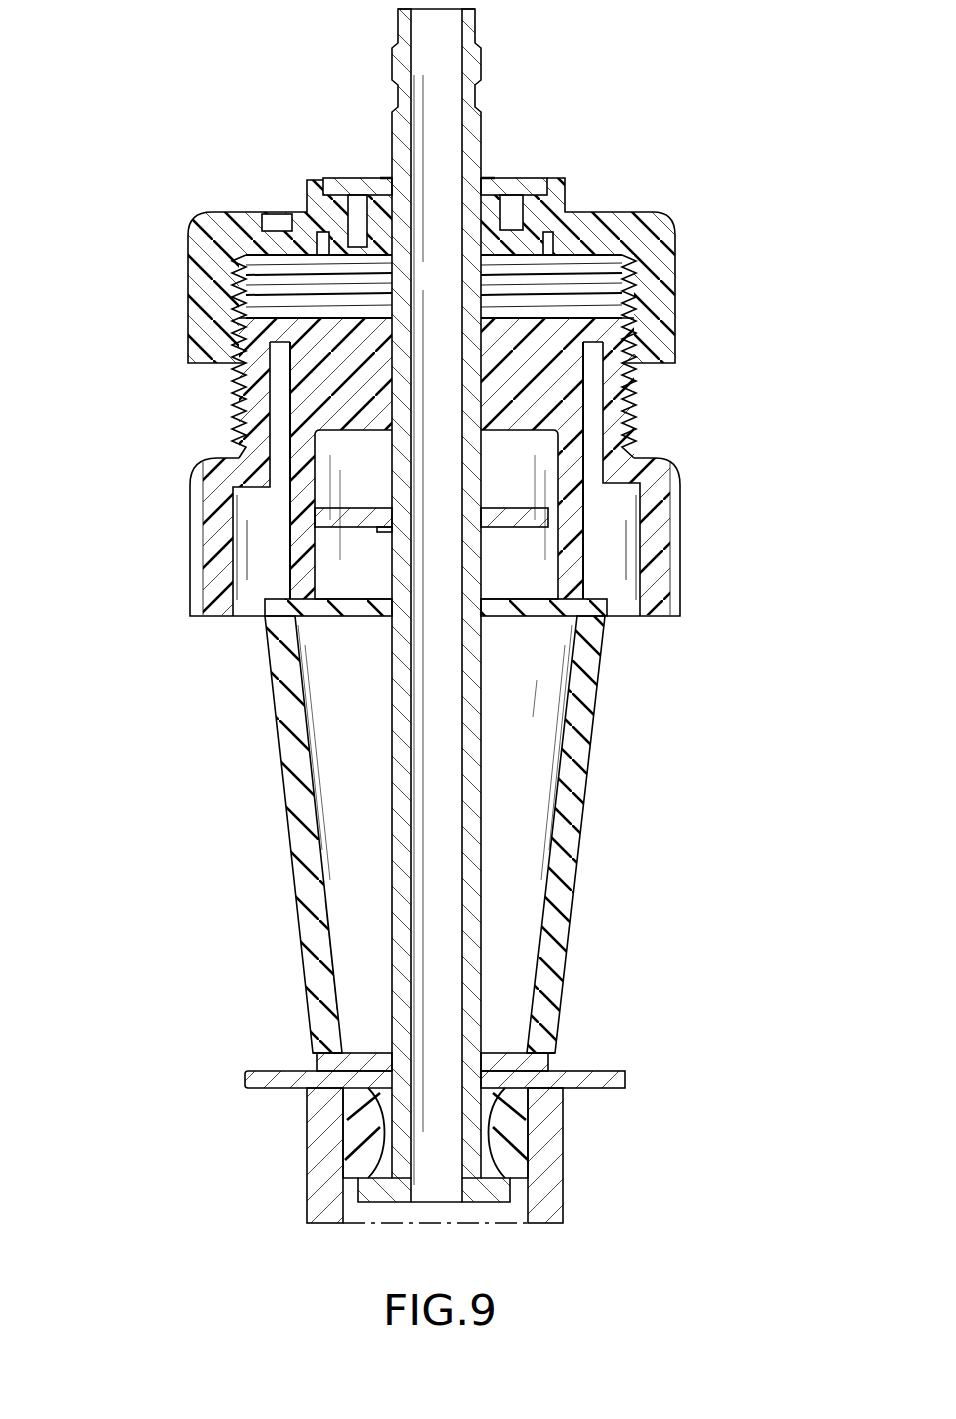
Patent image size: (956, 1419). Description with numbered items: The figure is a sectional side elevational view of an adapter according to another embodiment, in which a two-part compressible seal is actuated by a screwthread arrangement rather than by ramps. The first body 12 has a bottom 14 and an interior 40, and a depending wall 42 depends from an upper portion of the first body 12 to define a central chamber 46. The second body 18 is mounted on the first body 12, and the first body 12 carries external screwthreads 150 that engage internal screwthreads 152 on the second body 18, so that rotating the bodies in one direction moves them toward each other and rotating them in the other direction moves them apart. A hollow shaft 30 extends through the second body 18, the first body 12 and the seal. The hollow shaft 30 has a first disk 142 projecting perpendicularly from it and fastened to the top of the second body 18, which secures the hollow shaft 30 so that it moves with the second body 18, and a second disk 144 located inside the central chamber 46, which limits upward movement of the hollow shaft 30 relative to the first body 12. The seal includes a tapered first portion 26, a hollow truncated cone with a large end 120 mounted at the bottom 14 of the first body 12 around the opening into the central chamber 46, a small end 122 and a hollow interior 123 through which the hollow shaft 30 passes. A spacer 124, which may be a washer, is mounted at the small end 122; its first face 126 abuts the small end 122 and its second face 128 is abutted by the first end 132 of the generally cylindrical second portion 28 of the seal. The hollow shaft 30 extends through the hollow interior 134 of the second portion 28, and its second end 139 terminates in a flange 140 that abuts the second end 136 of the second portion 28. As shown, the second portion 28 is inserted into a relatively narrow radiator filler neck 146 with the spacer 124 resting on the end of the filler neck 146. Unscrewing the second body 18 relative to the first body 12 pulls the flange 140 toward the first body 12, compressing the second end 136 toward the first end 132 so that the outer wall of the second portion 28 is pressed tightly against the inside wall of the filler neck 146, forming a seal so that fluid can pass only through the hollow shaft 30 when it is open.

The first body 12 is at (680, 573).
The bottom 14 is at (662, 617).
The second body 18 is at (675, 277).
The first portion 26 is at (580, 838).
The second portion 28 is at (468, 1145).
The hollow shaft 30 is at (470, 150).
The interior 40 is at (270, 583).
The depending wall 42 is at (303, 520).
The central chamber 46 is at (525, 473).
The large end 120 is at (282, 658).
The small end 122 is at (310, 1013).
The hollow interior 123 is at (523, 748).
The spacer 124 is at (540, 1067).
The first face 126 is at (540, 1047).
The second face 128 is at (530, 1077).
The first end 132 is at (363, 1080).
The hollow interior 134 is at (377, 1125).
The second end 136 is at (363, 1163).
The second end 139 is at (512, 1130).
The flange 140 is at (492, 1203).
The first disk 142 is at (348, 185).
The second disk 144 is at (538, 518).
The filler neck 146 is at (560, 1192).
The external screwthreads 150 is at (637, 380).
The internal screwthreads 152 is at (268, 283).